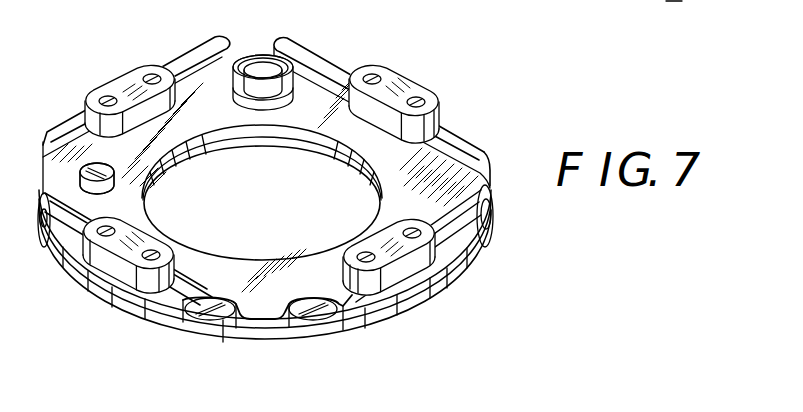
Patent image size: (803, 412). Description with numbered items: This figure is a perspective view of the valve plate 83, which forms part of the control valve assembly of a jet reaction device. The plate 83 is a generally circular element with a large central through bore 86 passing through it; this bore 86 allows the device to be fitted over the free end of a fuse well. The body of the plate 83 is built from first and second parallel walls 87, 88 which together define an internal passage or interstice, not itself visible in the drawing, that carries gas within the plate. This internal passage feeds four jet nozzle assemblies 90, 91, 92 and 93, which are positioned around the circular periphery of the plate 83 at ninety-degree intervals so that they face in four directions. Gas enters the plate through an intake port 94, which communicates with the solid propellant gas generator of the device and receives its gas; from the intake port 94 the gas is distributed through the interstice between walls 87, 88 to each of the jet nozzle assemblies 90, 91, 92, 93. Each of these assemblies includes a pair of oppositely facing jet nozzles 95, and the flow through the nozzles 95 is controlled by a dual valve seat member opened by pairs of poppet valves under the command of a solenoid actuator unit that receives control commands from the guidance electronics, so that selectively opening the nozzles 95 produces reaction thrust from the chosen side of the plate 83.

The valve plate 83 is at (366, 300).
The through bore 86 is at (199, 155).
The first parallel wall 87 is at (494, 216).
The second parallel wall 88 is at (438, 288).
The jet nozzle assembly 90 is at (115, 265).
The jet nozzle assembly 91 is at (138, 68).
The jet nozzle assembly 92 is at (447, 140).
The jet nozzle assembly 93 is at (463, 262).
The intake port 94 is at (261, 57).
The jet nozzles 95 is at (219, 322).